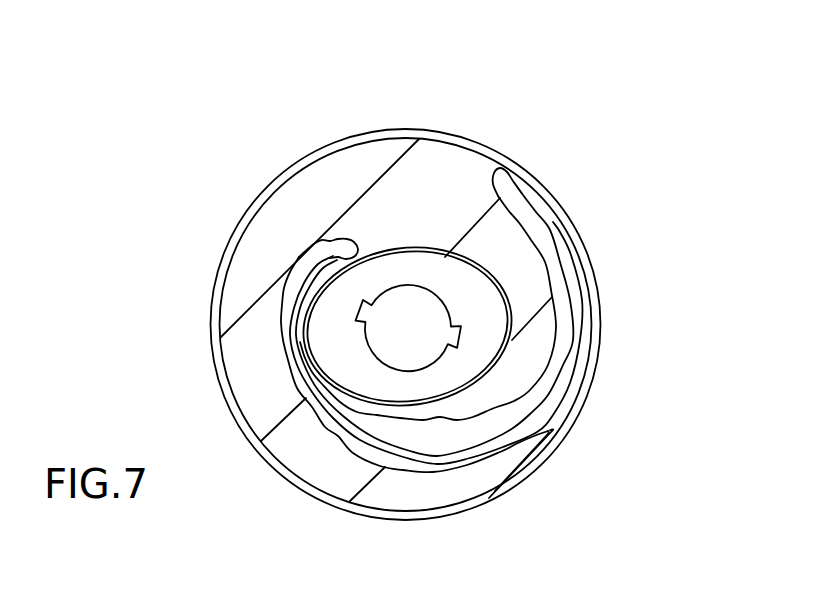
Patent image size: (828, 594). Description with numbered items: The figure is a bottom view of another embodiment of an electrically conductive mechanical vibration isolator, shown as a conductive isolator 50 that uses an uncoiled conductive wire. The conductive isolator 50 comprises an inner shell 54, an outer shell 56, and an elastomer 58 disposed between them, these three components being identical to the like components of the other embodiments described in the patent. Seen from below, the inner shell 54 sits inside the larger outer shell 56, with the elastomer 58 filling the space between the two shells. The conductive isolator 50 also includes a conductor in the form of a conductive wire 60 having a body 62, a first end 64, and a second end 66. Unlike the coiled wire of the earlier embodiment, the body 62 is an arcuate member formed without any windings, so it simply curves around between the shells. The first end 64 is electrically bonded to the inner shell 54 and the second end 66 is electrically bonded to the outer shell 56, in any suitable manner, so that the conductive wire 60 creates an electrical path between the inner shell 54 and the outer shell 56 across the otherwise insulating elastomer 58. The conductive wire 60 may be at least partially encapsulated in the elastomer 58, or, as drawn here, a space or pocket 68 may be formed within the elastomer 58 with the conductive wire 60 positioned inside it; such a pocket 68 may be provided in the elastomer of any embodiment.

The conductive isolator 50 is at (152, 224).
The inner shell 54 is at (362, 268).
The outer shell 56 is at (517, 190).
The elastomer 58 is at (430, 182).
The conductive wire 60 is at (542, 433).
The body 62 is at (557, 389).
The first end 64 is at (328, 253).
The second end 66 is at (519, 194).
The pocket 68 is at (427, 427).